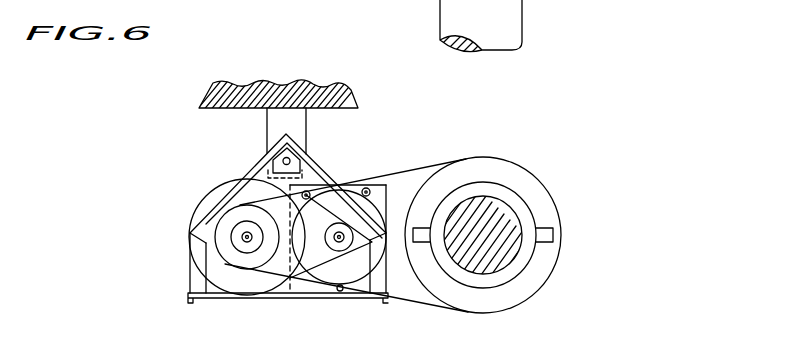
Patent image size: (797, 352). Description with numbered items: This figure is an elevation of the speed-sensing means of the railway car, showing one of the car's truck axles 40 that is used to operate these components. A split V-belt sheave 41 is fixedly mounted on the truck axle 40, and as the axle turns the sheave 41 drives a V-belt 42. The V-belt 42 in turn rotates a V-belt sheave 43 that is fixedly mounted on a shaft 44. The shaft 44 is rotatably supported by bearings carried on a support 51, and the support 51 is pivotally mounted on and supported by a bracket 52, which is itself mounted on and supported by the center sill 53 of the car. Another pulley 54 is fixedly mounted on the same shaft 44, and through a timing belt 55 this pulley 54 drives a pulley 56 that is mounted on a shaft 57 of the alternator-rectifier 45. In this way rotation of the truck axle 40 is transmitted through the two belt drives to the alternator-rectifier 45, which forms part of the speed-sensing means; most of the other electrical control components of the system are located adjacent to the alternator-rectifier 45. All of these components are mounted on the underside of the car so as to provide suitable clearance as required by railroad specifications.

The truck axle 40 is at (512, 210).
The split V-belt sheave 41 is at (550, 273).
The V-belt 42 is at (403, 172).
The V-belt sheave 43 is at (218, 187).
The shaft 44 is at (247, 240).
The alternator-rectifier 45 is at (366, 158).
The support 51 is at (188, 297).
The bracket 52 is at (306, 122).
The center sill 53 is at (348, 98).
The pulley 54 is at (228, 268).
The timing belt 55 is at (294, 275).
The pulley 56 is at (346, 285).
The shaft 57 is at (338, 243).